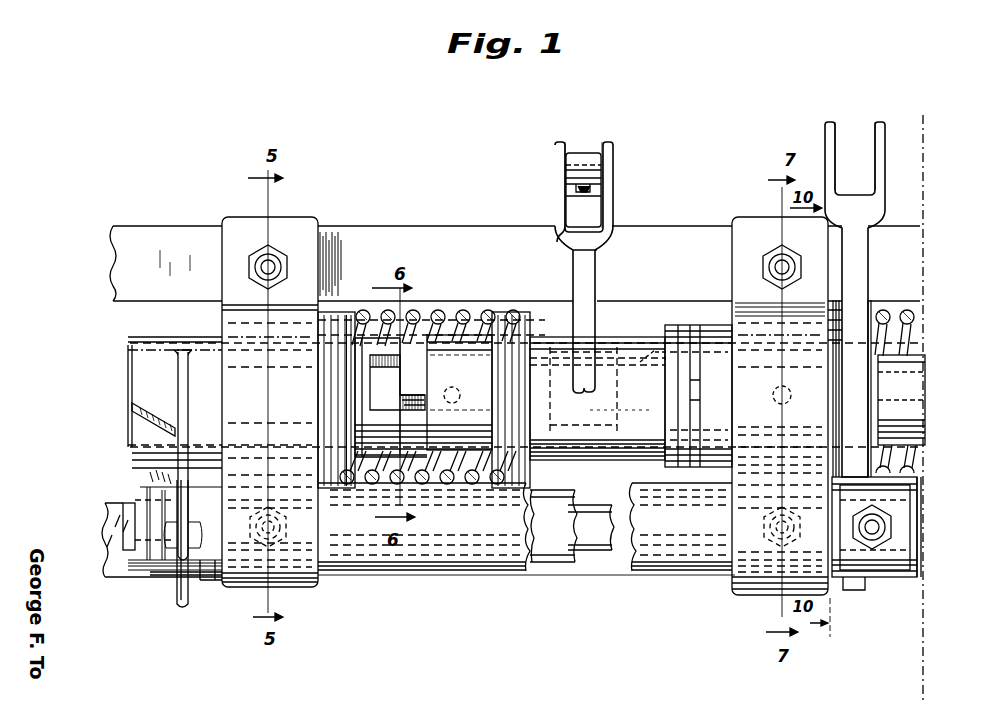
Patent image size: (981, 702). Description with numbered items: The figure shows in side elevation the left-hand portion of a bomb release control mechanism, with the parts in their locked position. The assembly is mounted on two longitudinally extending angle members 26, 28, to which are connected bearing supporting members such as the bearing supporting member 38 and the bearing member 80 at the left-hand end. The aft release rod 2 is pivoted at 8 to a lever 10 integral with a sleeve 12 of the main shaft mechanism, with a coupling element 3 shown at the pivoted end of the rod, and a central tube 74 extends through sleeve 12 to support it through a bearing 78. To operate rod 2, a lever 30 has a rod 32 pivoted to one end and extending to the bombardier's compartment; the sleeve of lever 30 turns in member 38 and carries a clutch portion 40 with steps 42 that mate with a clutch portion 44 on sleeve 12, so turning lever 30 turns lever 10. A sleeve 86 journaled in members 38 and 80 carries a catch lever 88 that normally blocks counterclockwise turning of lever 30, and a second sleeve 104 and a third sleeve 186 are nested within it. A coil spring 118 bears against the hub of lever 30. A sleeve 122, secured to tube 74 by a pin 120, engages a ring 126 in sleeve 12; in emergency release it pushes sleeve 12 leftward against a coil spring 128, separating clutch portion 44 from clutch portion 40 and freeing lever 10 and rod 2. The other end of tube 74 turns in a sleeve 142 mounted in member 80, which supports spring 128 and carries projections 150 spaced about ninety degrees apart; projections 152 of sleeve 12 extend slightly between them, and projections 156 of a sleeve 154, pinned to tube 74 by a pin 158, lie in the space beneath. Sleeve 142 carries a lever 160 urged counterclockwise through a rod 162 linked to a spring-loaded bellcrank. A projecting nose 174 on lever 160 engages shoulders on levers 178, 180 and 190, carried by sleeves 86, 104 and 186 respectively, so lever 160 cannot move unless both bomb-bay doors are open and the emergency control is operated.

The aft release rod 2 is at (581, 163).
The coupling block 3 is at (596, 211).
The pivot 8 is at (576, 173).
The lever 10 is at (590, 277).
The sleeve 12 is at (613, 355).
The angle member 26 is at (163, 243).
The angle member 28 is at (122, 583).
The lever 30 is at (854, 284).
The rod 32 is at (660, 478).
The bearing supporting member 38 is at (755, 305).
The clutch portion 40 is at (706, 333).
The steps 42 is at (692, 401).
The clutch portion 44 is at (677, 322).
The tube 74 is at (382, 389).
The bore 78 is at (608, 409).
The bearing member 80 is at (243, 319).
The sleeve 86 is at (446, 540).
The catch lever 88 is at (856, 590).
The second sleeve 104 is at (543, 540).
The coil spring 118 is at (908, 315).
The pin 120 is at (776, 398).
The sleeve 122 is at (772, 357).
The ring 126 is at (663, 348).
The coil spring 128 is at (470, 312).
The sleeve 142 is at (146, 356).
The projections 150 is at (378, 338).
The projections 152 is at (408, 417).
The sleeve 154 is at (462, 485).
The projections 156 is at (412, 398).
The pin 158 is at (453, 395).
The lever 160 is at (181, 367).
The rod 162 is at (189, 597).
The projecting nose 174 is at (140, 476).
The lever 178 is at (212, 573).
The lever 180 is at (172, 572).
The third sleeve 186 is at (585, 540).
The lever 190 is at (135, 522).